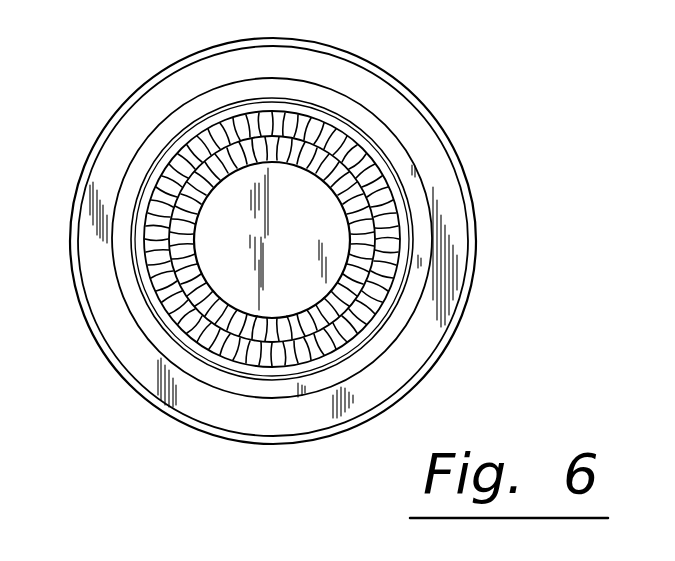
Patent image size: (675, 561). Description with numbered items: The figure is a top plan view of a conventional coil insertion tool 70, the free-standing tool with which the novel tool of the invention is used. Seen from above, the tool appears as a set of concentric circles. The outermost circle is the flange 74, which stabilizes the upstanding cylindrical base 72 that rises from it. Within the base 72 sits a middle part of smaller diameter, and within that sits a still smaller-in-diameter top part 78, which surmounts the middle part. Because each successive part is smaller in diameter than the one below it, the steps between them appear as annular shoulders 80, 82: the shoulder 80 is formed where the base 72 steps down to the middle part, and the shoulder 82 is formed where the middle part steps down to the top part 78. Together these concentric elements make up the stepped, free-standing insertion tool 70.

The coil insertion tool 70 is at (530, 172).
The cylindrical base 72 is at (382, 123).
The flange 74 is at (428, 336).
The top part 78 is at (177, 157).
The annular shoulder 80 is at (130, 293).
The annular shoulder 82 is at (170, 310).